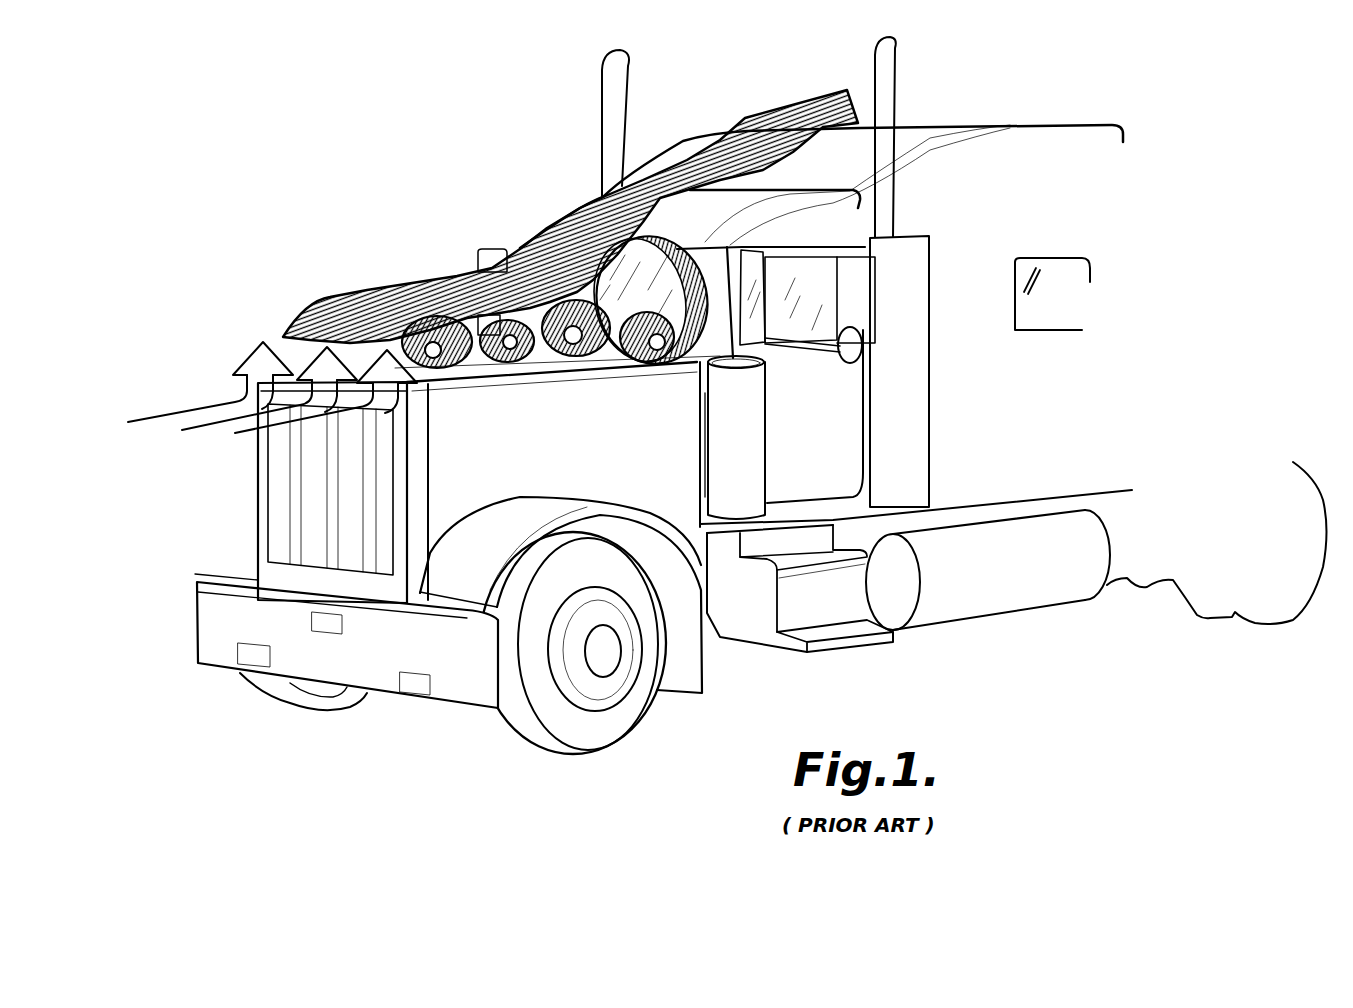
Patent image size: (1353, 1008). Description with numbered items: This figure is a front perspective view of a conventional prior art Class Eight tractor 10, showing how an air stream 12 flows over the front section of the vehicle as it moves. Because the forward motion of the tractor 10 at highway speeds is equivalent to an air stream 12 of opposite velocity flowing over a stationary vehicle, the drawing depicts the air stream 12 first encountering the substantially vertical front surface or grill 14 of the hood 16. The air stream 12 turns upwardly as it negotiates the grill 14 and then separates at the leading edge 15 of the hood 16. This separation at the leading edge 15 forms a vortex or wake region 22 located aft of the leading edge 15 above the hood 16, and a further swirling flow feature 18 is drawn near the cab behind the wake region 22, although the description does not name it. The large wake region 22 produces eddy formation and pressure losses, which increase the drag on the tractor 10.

The Class 8 tractor 10 is at (300, 148).
The air stream 12 is at (367, 290).
The grill 14 is at (283, 489).
The leading edge 15 is at (287, 373).
The hood 16 is at (553, 365).
The air flow past cab 18 is at (590, 278).
The vortex or wake region 22 is at (517, 357).